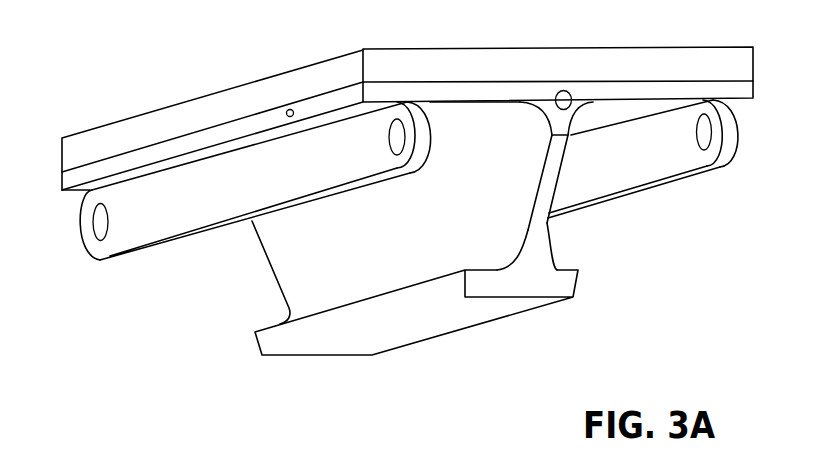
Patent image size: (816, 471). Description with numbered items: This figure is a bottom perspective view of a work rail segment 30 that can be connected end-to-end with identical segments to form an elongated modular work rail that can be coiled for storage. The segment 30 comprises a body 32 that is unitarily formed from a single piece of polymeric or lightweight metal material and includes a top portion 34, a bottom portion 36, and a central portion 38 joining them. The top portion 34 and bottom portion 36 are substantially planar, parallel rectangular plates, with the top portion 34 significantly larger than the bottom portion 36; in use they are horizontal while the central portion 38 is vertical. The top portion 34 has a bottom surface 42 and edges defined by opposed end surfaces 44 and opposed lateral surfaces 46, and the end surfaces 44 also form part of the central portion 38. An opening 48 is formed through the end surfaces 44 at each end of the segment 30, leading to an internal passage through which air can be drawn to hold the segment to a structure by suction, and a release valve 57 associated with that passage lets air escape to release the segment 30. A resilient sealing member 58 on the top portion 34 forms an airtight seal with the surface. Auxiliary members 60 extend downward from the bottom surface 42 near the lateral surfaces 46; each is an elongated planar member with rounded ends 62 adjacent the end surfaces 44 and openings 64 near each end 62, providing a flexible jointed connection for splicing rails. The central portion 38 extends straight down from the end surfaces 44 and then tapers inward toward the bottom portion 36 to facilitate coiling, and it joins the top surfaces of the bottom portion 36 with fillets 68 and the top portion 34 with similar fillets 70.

The work rail segment 30 is at (54, 51).
The body 32 is at (649, 257).
The top portion 34 is at (778, 80).
The bottom portion 36 is at (599, 295).
The central portion 38 is at (281, 258).
The bottom surface 42 is at (462, 108).
The end surfaces 44 is at (528, 92).
The lateral surfaces 46 is at (198, 140).
The opening 48 is at (556, 104).
The release valve 57 is at (290, 118).
The resilient sealing member 58 is at (213, 102).
The auxiliary members 60 is at (142, 235).
The rounded ends 62 is at (72, 262).
The openings 64 is at (95, 223).
The fillets 68 is at (500, 263).
The fillets 70 is at (578, 113).